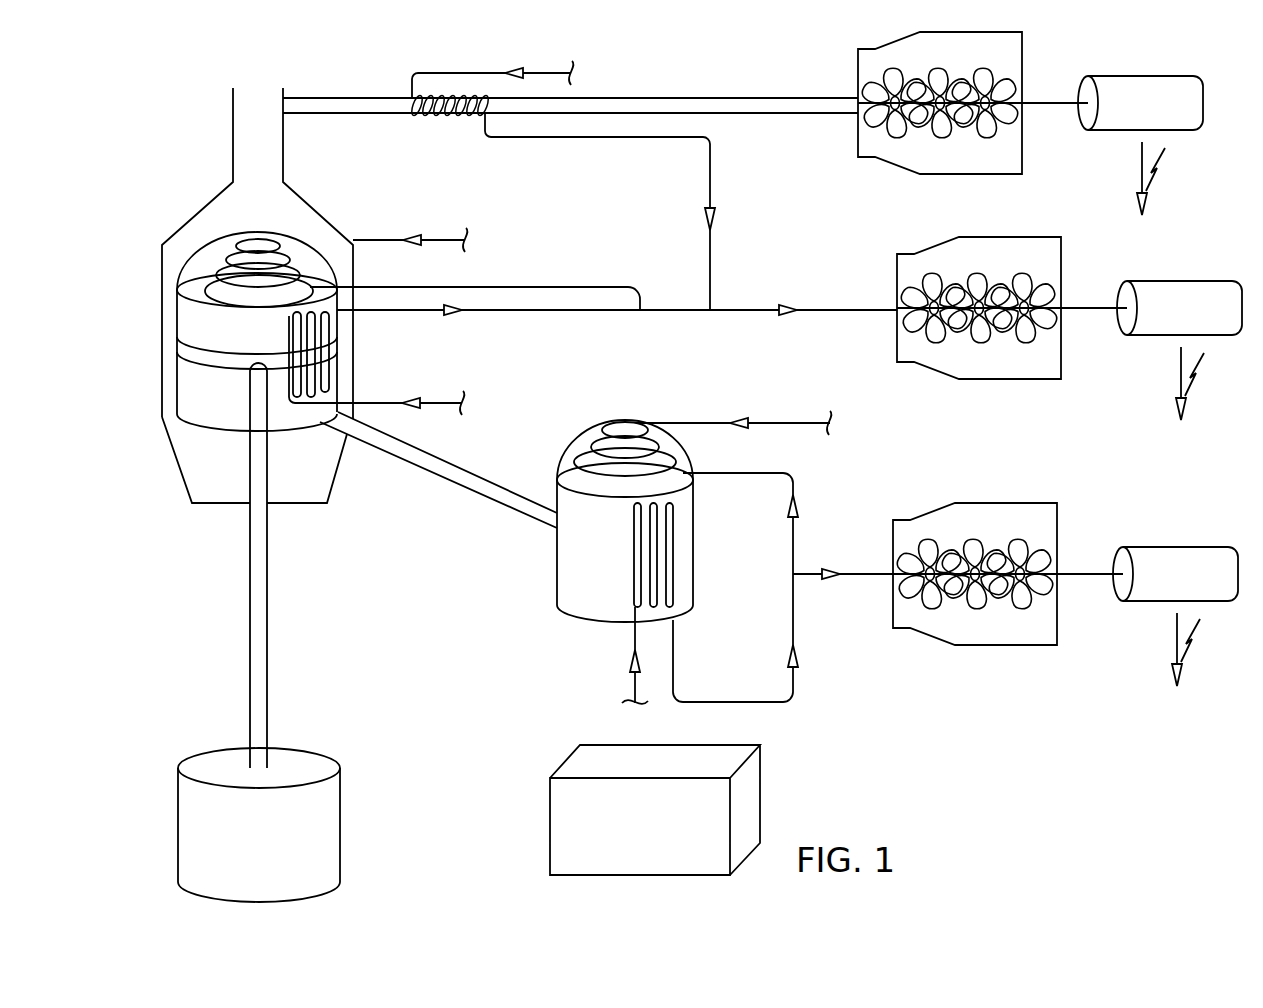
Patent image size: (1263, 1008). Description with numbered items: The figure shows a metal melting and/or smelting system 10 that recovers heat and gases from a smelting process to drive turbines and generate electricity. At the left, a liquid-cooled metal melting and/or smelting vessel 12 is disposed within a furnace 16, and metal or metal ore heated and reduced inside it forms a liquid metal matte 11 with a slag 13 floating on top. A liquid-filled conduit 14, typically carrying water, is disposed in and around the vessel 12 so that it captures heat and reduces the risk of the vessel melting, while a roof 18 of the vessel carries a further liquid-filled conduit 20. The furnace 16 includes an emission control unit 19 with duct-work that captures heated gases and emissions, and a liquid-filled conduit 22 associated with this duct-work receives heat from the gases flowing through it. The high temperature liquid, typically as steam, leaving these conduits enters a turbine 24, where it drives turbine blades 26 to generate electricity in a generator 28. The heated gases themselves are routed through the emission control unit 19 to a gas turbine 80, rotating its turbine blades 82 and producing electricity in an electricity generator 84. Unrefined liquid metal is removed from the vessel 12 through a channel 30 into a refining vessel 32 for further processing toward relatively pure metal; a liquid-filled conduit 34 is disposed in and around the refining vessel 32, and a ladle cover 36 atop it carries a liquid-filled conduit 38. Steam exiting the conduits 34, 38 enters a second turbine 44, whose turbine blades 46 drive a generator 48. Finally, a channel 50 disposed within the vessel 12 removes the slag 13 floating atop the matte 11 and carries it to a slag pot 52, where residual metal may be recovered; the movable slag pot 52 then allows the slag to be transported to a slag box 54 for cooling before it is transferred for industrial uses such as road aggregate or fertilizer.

The metal melting and/or smelting system 10 is at (995, 738).
The liquid metal matte 11 is at (193, 403).
The metal melting and/or smelting vessel 12 is at (177, 313).
The slag 13 is at (182, 345).
The liquid-filled conduit 14 is at (580, 311).
The furnace 16 is at (188, 470).
The roof 18 is at (247, 241).
The emission control unit 19 is at (345, 97).
The liquid-filled conduit 20 is at (385, 238).
The liquid-filled conduit 22 is at (600, 137).
The turbine 24 is at (1046, 236).
The turbine blades 26 is at (976, 281).
The generator 28 is at (1198, 281).
The channel 30 is at (478, 467).
The refining vessel 32 is at (560, 583).
The liquid-filled conduit 34 is at (738, 700).
The ladle cover 36 is at (583, 428).
The liquid-filled conduit 38 is at (779, 421).
The turbine 44 is at (1045, 503).
The turbine blades 46 is at (975, 548).
The generator 48 is at (1200, 547).
The channel 50 is at (268, 612).
The slag pot 52 is at (341, 792).
The slag box 54 is at (760, 800).
The gas turbine 80 is at (990, 175).
The turbine blades 82 is at (940, 85).
The electricity generator 84 is at (1145, 77).